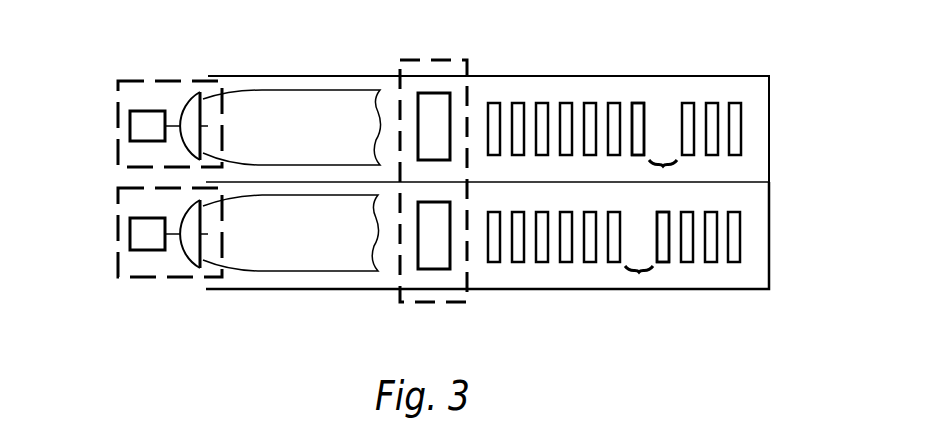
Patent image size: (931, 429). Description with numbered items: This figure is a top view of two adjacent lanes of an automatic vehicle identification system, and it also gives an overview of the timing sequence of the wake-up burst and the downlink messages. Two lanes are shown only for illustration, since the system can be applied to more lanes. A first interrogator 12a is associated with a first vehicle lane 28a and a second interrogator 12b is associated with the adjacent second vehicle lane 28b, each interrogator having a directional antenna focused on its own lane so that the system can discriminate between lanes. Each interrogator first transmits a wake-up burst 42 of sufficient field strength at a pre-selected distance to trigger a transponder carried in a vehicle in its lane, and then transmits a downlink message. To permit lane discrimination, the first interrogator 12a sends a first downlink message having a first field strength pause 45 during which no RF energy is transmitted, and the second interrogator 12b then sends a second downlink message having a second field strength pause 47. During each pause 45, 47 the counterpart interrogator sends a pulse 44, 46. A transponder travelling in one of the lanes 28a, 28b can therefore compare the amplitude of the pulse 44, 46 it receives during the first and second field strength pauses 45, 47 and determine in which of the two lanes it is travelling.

The first interrogator 12a is at (137, 111).
The second interrogator 12b is at (137, 218).
The first vehicle lane 28a is at (728, 82).
The second vehicle lane 28b is at (596, 285).
The wake-up burst 42 is at (448, 60).
The pulse 44 is at (640, 103).
The first field strength pause 45 is at (639, 274).
The pulse 46 is at (661, 262).
The second field strength pause 47 is at (663, 168).